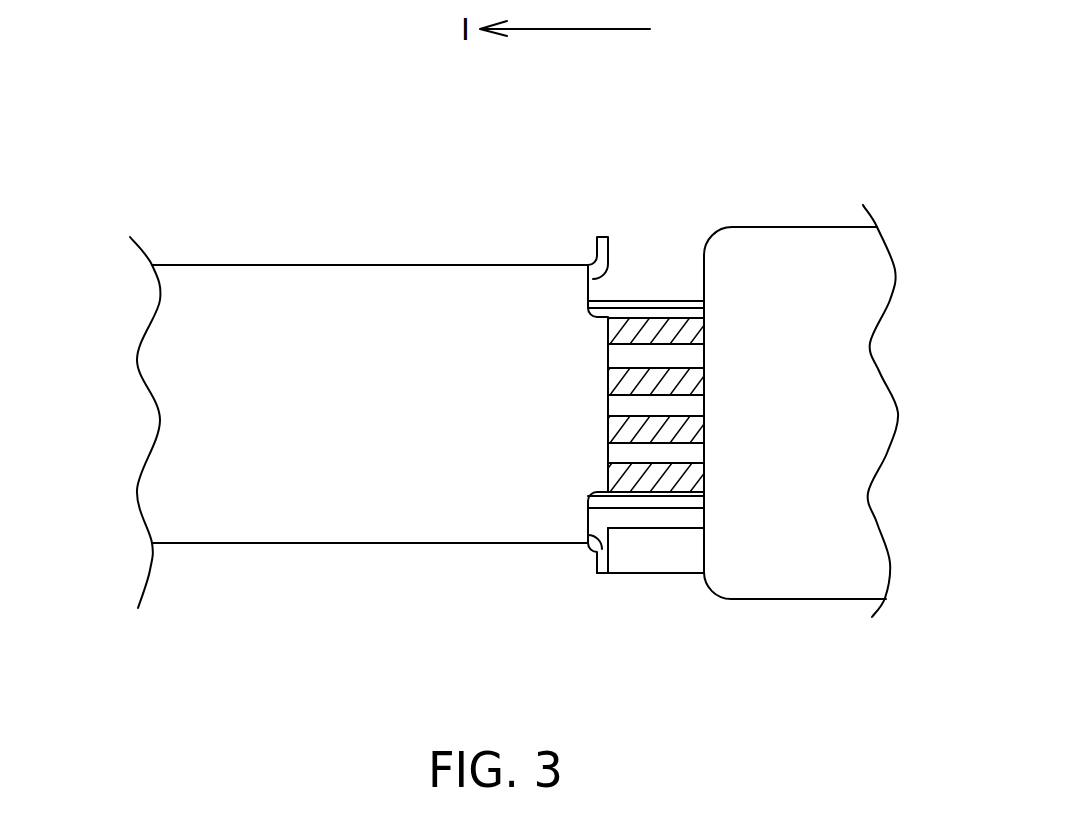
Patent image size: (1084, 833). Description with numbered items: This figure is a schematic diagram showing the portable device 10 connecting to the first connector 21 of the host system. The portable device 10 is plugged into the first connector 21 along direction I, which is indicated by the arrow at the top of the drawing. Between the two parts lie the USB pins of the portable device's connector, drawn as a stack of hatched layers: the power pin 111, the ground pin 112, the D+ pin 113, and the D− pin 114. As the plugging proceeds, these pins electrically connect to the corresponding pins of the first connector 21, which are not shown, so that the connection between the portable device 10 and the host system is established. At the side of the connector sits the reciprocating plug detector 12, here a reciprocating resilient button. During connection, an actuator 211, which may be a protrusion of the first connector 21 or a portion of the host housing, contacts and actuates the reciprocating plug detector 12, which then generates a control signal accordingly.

The portable device 10 is at (807, 182).
The reciprocating plug detector 12 is at (655, 560).
The first connector 21 is at (353, 185).
The power pin 111 is at (692, 334).
The ground pin 112 is at (692, 483).
The D+ pin 113 is at (692, 390).
The D− pin 114 is at (692, 435).
The actuator 211 is at (598, 549).